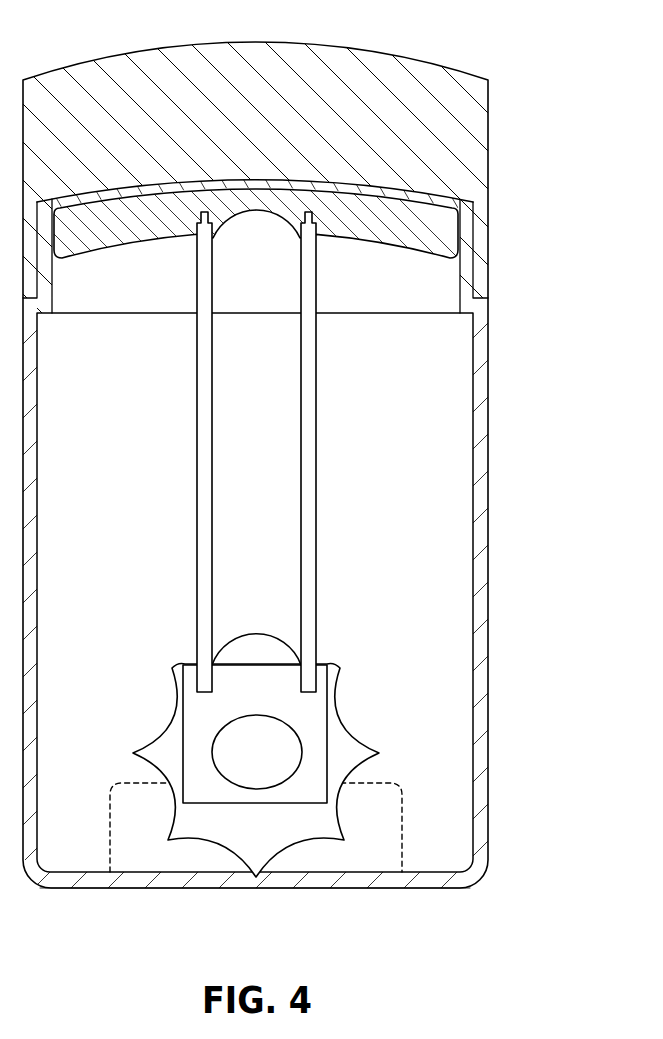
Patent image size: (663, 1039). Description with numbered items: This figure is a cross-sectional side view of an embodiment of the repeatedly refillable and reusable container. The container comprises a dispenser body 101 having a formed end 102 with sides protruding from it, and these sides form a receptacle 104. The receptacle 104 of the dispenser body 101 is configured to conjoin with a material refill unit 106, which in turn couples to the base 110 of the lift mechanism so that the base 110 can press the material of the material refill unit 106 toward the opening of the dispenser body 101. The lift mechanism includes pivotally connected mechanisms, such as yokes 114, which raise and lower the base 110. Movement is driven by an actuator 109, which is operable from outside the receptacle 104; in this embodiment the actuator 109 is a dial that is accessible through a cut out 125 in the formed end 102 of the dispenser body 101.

The dispenser body 101 is at (490, 708).
The formed end 102 is at (460, 888).
The receptacle 104 is at (410, 588).
The material refill unit 106 is at (453, 195).
The actuator 109 is at (218, 843).
The base 110 is at (445, 238).
The yokes 114 is at (316, 463).
The cut out 125 is at (402, 817).